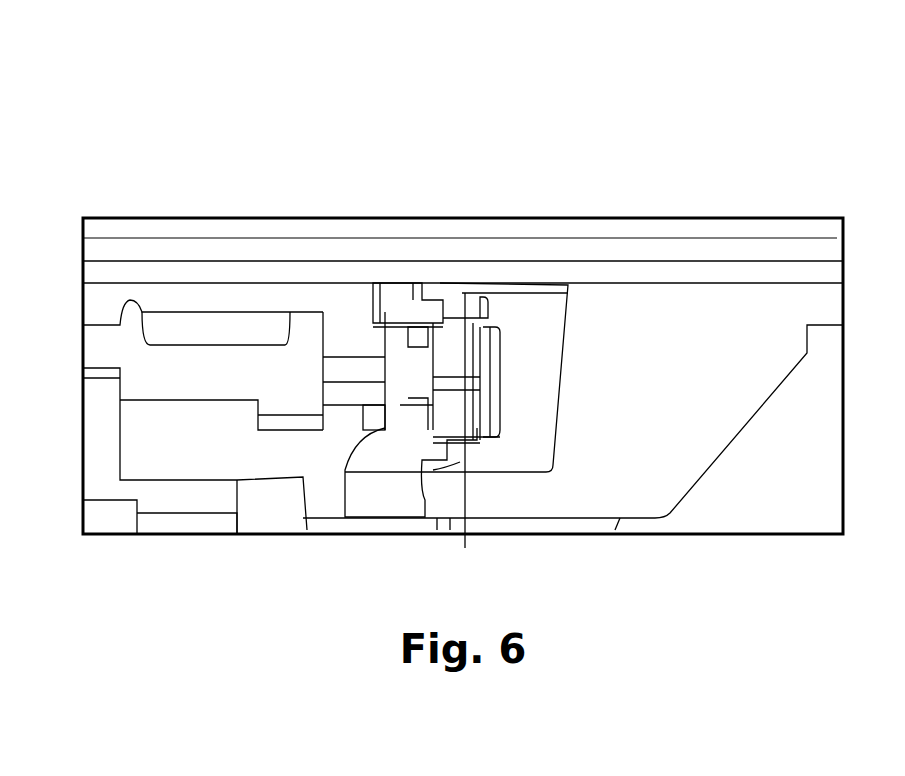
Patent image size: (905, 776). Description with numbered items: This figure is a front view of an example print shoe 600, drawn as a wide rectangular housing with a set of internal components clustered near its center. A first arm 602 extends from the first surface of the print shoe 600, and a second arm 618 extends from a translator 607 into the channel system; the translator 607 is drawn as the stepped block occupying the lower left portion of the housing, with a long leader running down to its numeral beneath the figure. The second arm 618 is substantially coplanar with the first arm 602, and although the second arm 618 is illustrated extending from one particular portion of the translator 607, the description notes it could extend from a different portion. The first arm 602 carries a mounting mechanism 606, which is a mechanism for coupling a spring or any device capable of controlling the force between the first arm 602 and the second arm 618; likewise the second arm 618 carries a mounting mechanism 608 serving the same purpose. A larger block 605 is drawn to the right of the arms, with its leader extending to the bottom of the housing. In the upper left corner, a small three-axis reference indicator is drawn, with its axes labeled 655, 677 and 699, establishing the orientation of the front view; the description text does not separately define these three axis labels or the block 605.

The print shoe 600 is at (488, 219).
The first arm 602 is at (408, 317).
The mounting block 605 is at (456, 428).
The mounting mechanism 606 is at (370, 318).
The translator 607 is at (237, 478).
The mounting mechanism 608 is at (385, 413).
The second arm 618 is at (418, 518).
The x-axis 655 is at (117, 128).
The y-axis 677 is at (117, 128).
The z-axis 699 is at (117, 128).